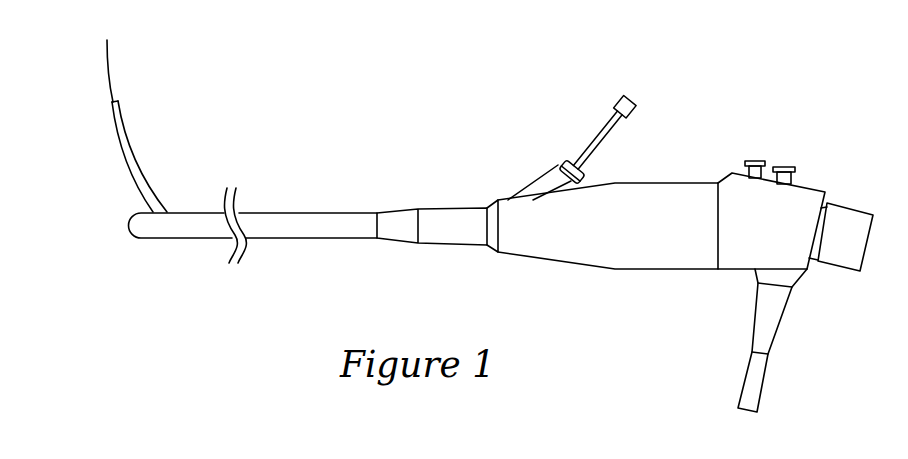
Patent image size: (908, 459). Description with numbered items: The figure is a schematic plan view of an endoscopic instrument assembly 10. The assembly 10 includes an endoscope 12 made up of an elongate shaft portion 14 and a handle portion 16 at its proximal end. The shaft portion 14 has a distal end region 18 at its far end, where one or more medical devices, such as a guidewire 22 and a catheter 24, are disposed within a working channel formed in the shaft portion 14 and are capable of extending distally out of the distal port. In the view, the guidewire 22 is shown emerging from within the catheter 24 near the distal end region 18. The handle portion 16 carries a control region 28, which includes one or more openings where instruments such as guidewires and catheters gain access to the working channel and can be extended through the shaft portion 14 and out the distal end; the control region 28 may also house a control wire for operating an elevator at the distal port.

The endoscopic instrument assembly 10 is at (378, 182).
The endoscope 12 is at (547, 267).
The shaft portion 14 is at (280, 233).
The handle portion 16 is at (798, 200).
The distal end region 18 is at (188, 215).
The guidewire 22 is at (113, 73).
The catheter 24 is at (127, 158).
The control region 28 is at (598, 123).